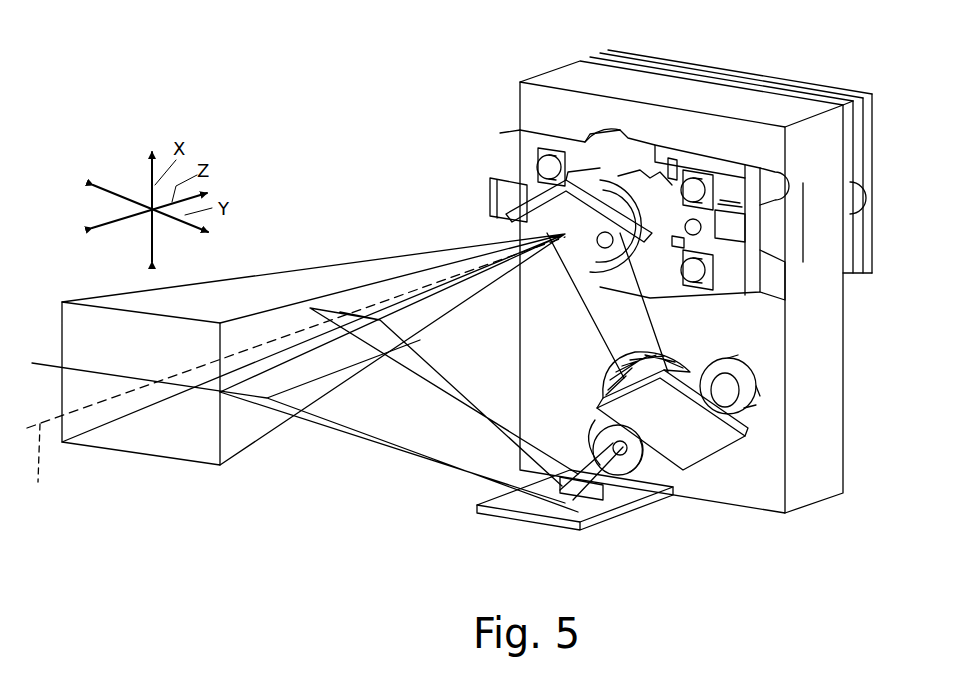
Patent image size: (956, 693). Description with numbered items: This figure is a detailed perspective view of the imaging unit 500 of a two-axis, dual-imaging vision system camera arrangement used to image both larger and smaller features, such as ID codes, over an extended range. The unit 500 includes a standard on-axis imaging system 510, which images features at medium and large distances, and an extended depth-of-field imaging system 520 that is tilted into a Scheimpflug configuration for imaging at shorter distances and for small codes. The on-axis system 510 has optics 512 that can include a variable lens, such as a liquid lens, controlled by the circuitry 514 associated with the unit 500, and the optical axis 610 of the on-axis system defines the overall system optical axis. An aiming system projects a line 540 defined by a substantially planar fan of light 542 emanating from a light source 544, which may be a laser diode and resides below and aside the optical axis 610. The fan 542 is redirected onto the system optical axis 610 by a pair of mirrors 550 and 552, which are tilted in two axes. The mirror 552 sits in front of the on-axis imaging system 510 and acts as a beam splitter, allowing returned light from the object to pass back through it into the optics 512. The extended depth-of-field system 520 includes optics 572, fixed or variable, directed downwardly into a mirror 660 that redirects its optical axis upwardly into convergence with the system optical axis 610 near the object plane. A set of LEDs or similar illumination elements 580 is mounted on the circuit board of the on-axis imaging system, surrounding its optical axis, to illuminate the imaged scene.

The imaging unit 500 is at (712, 63).
The on-axis imaging system 510 is at (697, 140).
The optics 512 is at (621, 193).
The circuitry 514 is at (836, 85).
The extended DOF imaging system 520 is at (690, 365).
The line 540 is at (160, 390).
The fan of light 542 is at (748, 423).
The light source 544 is at (740, 396).
The mirror 550 is at (697, 445).
The mirror 552 is at (540, 214).
The optics 572 is at (642, 470).
The illumination elements 580 is at (541, 163).
The optical axis 610 is at (36, 469).
The mirror 660 is at (517, 523).